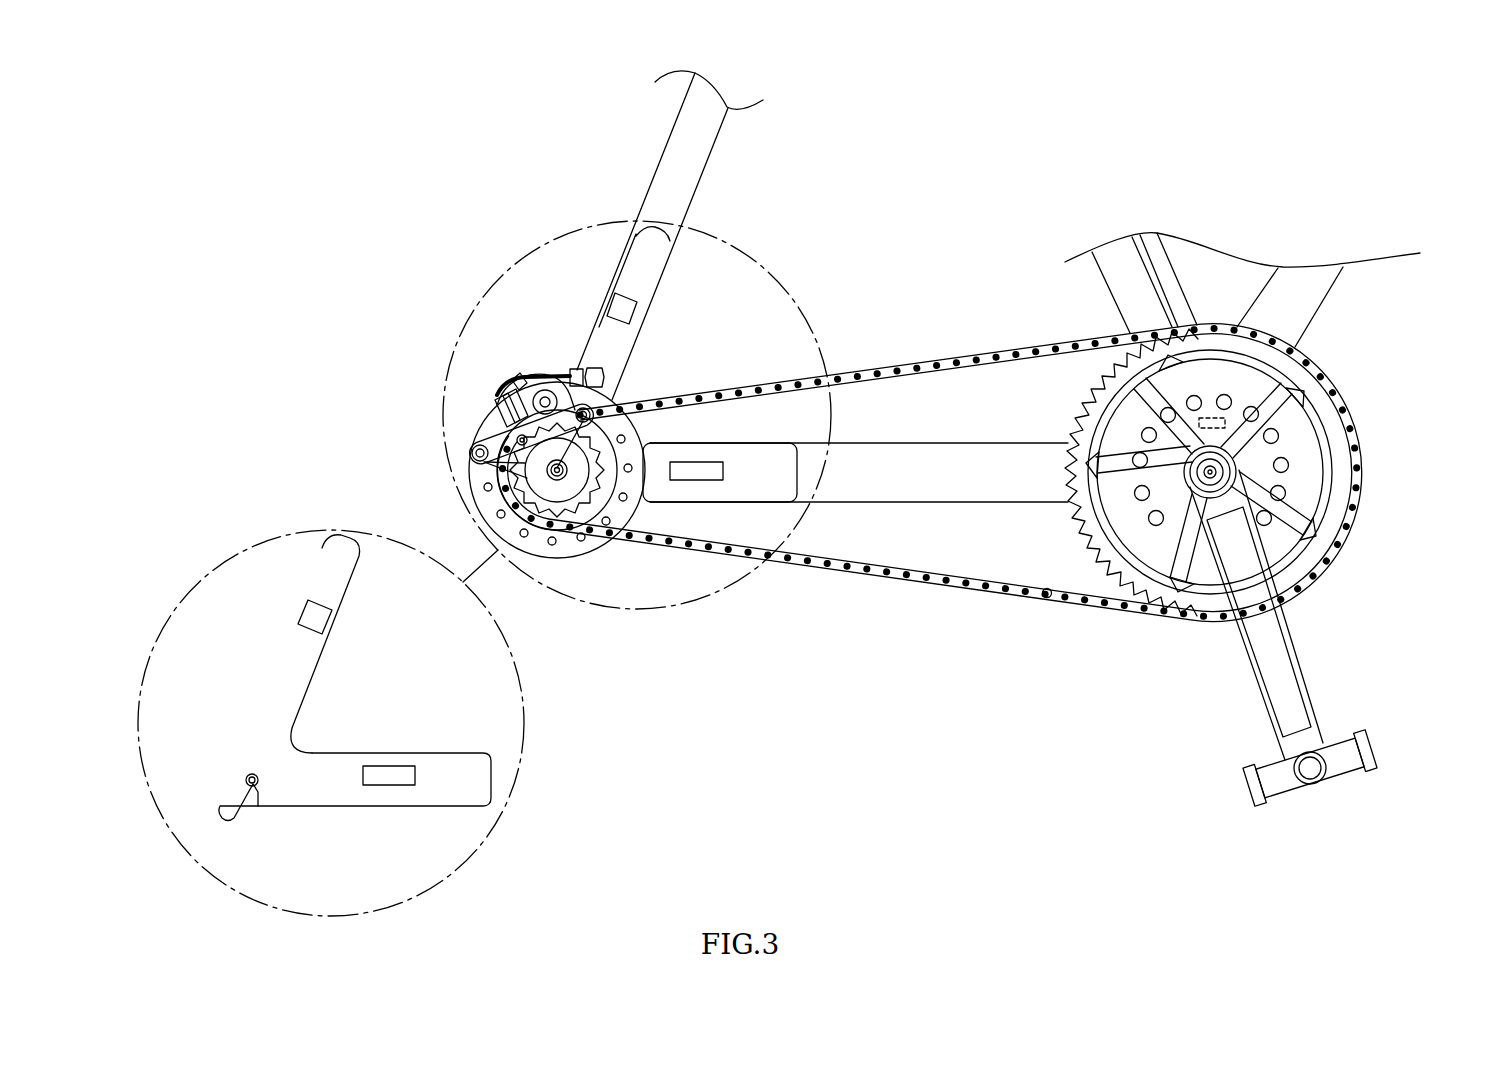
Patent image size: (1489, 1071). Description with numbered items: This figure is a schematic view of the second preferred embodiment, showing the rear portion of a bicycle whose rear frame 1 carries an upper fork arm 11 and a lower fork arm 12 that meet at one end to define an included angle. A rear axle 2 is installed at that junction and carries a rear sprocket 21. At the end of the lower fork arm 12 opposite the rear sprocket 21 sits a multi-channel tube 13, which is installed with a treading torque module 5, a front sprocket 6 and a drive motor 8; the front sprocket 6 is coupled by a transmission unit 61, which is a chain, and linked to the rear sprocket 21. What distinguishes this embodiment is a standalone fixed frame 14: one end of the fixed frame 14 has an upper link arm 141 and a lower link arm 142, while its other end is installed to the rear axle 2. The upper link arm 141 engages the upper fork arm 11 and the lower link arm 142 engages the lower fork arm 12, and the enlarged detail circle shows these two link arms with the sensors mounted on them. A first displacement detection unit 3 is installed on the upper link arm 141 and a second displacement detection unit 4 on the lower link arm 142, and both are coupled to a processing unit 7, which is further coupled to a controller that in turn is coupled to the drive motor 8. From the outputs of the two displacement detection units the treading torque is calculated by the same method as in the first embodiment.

The rear frame 1 is at (649, 101).
The upper fork arm 11 is at (668, 172).
The lower fork arm 12 is at (968, 487).
The multi-channel tube 13 is at (1302, 475).
The fixed frame 14 is at (551, 314).
The upper link arm 141 is at (633, 232).
The lower link arm 142 is at (753, 502).
The rear axle 2 is at (508, 387).
The rear sprocket 21 is at (597, 518).
The first displacement detection unit 3 is at (618, 307).
The second displacement detection unit 4 is at (700, 470).
The treading torque module 5 is at (1378, 550).
The front sprocket 6 is at (1133, 585).
The transmission unit 61 is at (1046, 594).
The processing unit 7 is at (1198, 413).
The drive motor 8 is at (1272, 482).